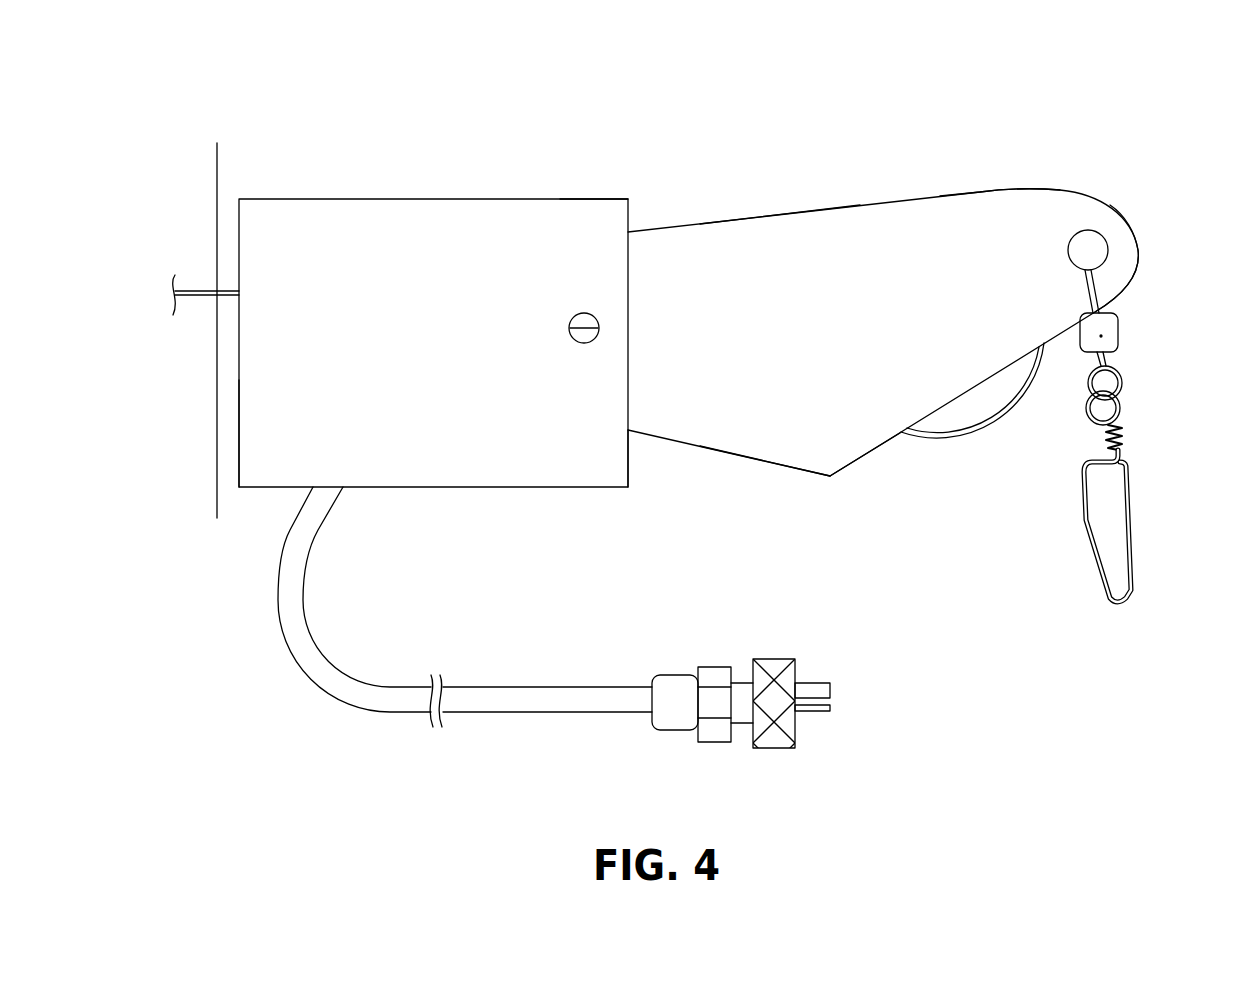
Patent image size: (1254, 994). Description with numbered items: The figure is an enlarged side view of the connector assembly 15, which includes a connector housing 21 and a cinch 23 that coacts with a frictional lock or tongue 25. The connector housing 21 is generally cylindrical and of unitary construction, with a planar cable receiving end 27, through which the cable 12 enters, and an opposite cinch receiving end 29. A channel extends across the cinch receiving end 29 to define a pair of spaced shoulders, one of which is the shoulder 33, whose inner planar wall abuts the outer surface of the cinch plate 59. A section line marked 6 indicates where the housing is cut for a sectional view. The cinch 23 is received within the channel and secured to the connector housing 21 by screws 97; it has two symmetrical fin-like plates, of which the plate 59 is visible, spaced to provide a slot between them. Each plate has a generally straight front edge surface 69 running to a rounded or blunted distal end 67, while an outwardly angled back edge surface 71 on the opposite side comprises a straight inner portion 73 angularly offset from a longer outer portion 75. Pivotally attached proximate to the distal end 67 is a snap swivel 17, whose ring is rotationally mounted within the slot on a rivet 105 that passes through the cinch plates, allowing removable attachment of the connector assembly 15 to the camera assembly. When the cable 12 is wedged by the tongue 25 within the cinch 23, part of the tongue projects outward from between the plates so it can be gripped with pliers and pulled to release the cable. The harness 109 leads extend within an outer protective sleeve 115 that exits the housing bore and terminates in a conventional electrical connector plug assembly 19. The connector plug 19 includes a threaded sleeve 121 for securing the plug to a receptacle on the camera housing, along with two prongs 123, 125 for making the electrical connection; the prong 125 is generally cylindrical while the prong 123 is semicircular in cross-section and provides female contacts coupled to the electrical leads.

The connector assembly 15 is at (940, 112).
The section line 6- 6 is at (193, 162).
The cable 12 is at (190, 291).
The connector housing 21 is at (502, 216).
The cable receiving end 27 is at (239, 433).
The shoulder 33 is at (619, 211).
The cinch receiving end 29 is at (628, 460).
The screw 97 is at (583, 343).
The plate 59 is at (938, 294).
The cinch 23 is at (748, 218).
The front edge surface 69 is at (978, 191).
The distal end 67 is at (1141, 249).
The inner portion 73 is at (797, 472).
The back edge surface 71 is at (868, 454).
The tongue 25 is at (958, 414).
The outer portion 75 is at (1026, 396).
The rivet 105 is at (1096, 256).
The snap swivel 17 is at (1124, 387).
The harness 109 is at (356, 682).
The outer protective sleeve 115 is at (552, 688).
The connector plug assembly 19 is at (670, 729).
The threaded sleeve 121 is at (775, 749).
The prong 123 is at (817, 683).
The prong 125 is at (817, 712).